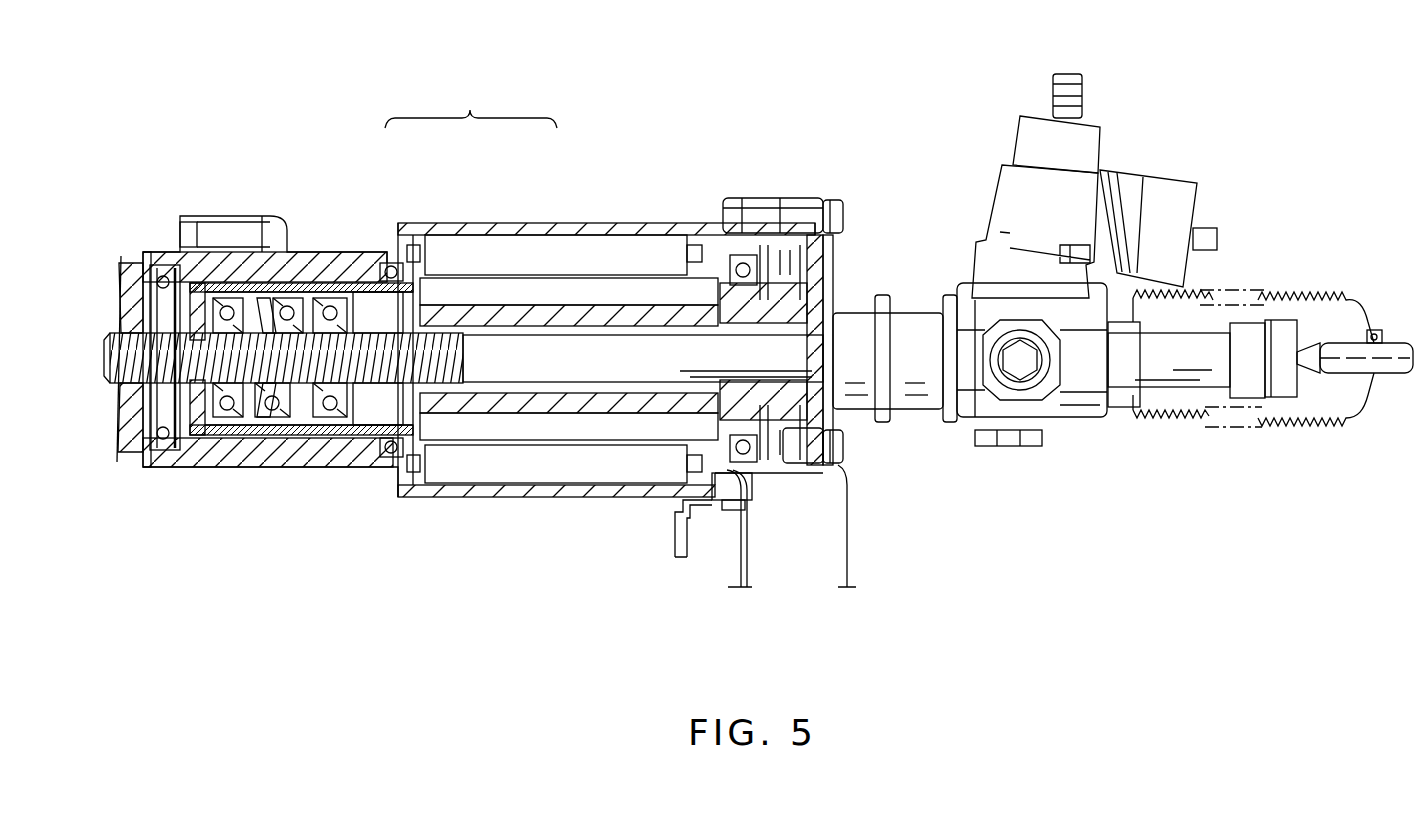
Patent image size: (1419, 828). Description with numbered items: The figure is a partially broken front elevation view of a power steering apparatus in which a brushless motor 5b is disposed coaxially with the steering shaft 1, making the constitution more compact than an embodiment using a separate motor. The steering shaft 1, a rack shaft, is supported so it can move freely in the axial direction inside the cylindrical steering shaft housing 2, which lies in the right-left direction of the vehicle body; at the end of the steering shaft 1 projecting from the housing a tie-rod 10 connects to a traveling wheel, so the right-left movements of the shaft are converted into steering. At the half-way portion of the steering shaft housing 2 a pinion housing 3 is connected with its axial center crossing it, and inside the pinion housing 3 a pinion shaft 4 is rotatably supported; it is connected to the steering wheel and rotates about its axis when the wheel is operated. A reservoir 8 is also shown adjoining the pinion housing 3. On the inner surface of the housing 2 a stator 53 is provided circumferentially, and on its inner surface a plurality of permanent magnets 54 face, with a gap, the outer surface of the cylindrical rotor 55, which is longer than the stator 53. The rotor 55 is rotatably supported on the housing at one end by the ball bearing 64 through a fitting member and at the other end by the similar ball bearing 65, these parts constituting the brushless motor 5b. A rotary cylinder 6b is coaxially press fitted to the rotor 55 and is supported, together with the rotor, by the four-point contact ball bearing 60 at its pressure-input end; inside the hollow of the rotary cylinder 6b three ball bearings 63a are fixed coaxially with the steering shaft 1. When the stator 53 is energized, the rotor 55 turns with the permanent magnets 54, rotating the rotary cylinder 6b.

The steering shaft 1 is at (122, 430).
The steering shaft housing 2 is at (548, 495).
The pinion housing 3 is at (1000, 200).
The pinion shaft 4 is at (1085, 100).
The brushless motor 5b is at (471, 99).
The rotary cylinder 6b is at (302, 425).
The reservoir 8 is at (1170, 185).
The tie-rod 10 is at (1397, 370).
The stator 53 is at (465, 247).
The permanent magnet 54 is at (543, 287).
The rotor 55 is at (448, 313).
The 4-point contact ball bearing 60 is at (160, 258).
The ball bearing 63a is at (233, 420).
The ball bearing 64 is at (729, 240).
The ball bearing 65 is at (387, 252).